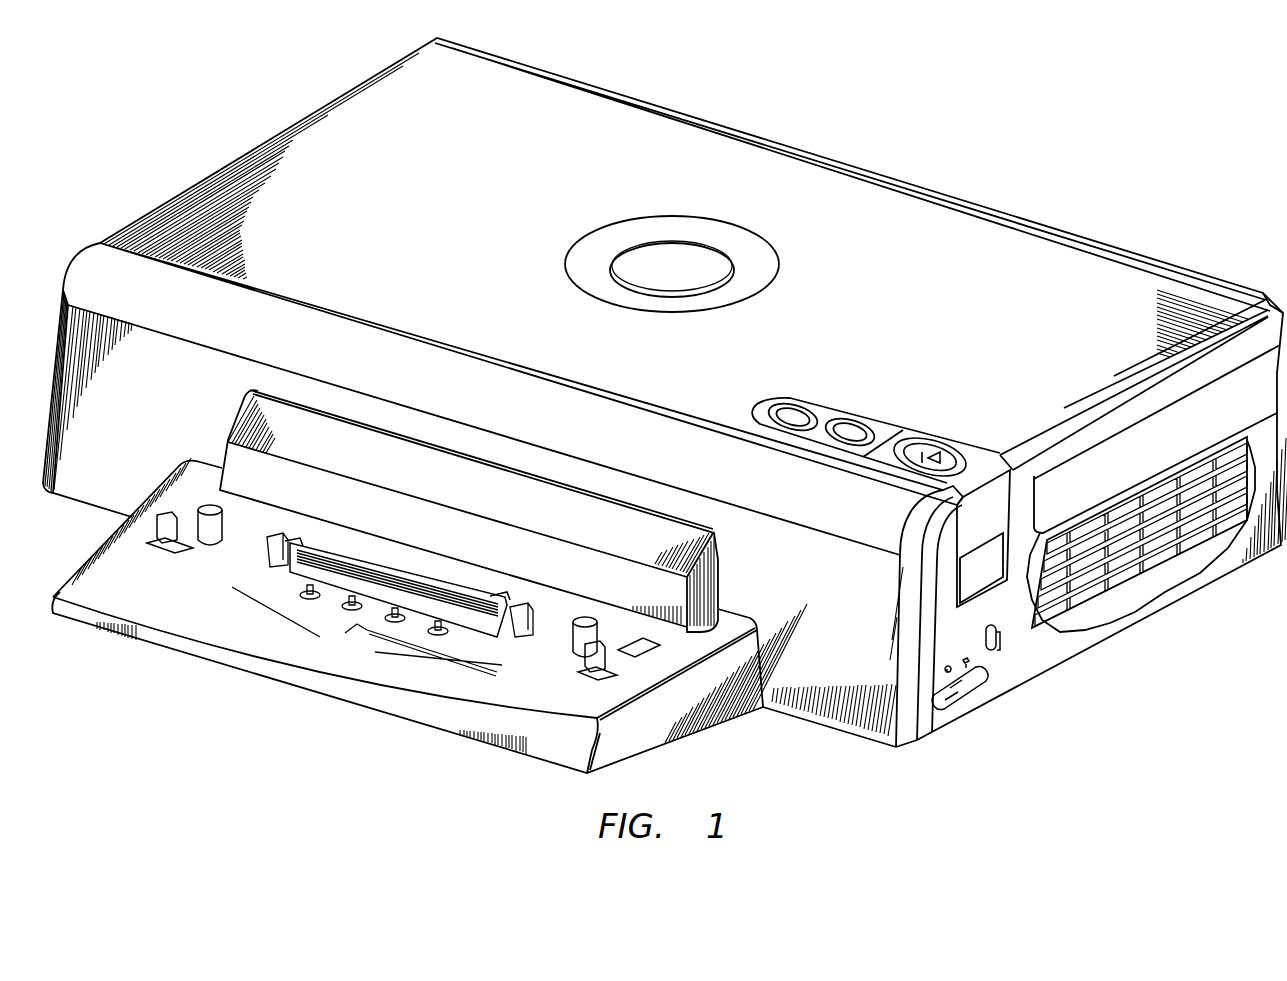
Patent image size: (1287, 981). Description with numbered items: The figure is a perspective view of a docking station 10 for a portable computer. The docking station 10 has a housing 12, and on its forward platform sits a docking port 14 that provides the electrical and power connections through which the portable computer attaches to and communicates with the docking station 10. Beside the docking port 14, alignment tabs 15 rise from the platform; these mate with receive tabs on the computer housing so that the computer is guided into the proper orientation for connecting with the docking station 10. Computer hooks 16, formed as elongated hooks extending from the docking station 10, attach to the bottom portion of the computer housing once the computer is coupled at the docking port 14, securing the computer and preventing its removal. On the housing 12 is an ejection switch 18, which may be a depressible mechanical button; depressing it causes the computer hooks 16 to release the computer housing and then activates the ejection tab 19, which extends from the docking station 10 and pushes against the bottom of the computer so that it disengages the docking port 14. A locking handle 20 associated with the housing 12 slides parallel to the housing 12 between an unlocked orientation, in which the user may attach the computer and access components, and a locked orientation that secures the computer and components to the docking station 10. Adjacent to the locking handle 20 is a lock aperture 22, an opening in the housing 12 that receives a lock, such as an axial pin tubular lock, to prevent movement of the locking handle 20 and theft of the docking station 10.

The docking station 10 is at (1002, 126).
The housing 12 is at (840, 195).
The docking port 14 is at (397, 602).
The alignment tab 15 is at (203, 538).
The computer hook 16 is at (175, 512).
The ejection switch 18 is at (914, 438).
The ejection tab 19 is at (640, 647).
The locking handle 20 is at (960, 690).
The lock aperture 22 is at (998, 647).